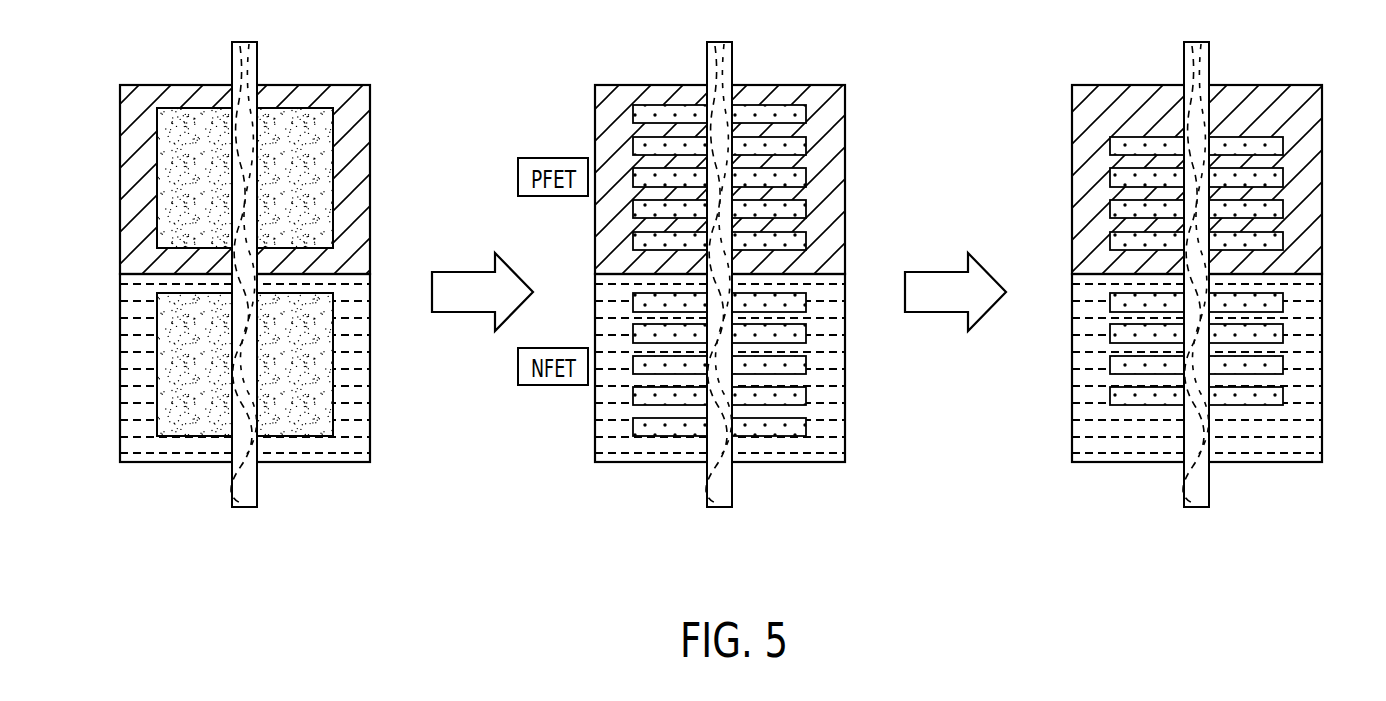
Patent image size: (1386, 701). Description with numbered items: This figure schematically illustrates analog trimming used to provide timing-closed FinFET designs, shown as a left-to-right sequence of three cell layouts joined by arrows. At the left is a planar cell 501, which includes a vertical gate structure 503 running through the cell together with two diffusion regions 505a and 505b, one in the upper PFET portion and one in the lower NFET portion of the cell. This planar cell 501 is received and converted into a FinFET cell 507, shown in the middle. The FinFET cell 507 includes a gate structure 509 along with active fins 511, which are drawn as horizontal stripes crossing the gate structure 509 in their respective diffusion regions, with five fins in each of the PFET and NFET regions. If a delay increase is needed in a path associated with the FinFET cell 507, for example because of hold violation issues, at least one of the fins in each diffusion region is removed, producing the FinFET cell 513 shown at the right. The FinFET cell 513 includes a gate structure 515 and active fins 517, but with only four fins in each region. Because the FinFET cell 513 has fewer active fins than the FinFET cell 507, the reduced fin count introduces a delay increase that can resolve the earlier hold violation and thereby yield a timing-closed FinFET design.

The planar cell 501 is at (147, 465).
The gate structure 503 is at (248, 502).
The diffusion region 505a is at (307, 115).
The diffusion region 505b is at (323, 423).
The FinFET cell 507 is at (622, 465).
The gate structure 509 is at (723, 502).
The active fins 511 is at (807, 397).
The FinFET cell 513 is at (1100, 465).
The gate structure 515 is at (1200, 502).
The active fins 517 is at (1283, 397).